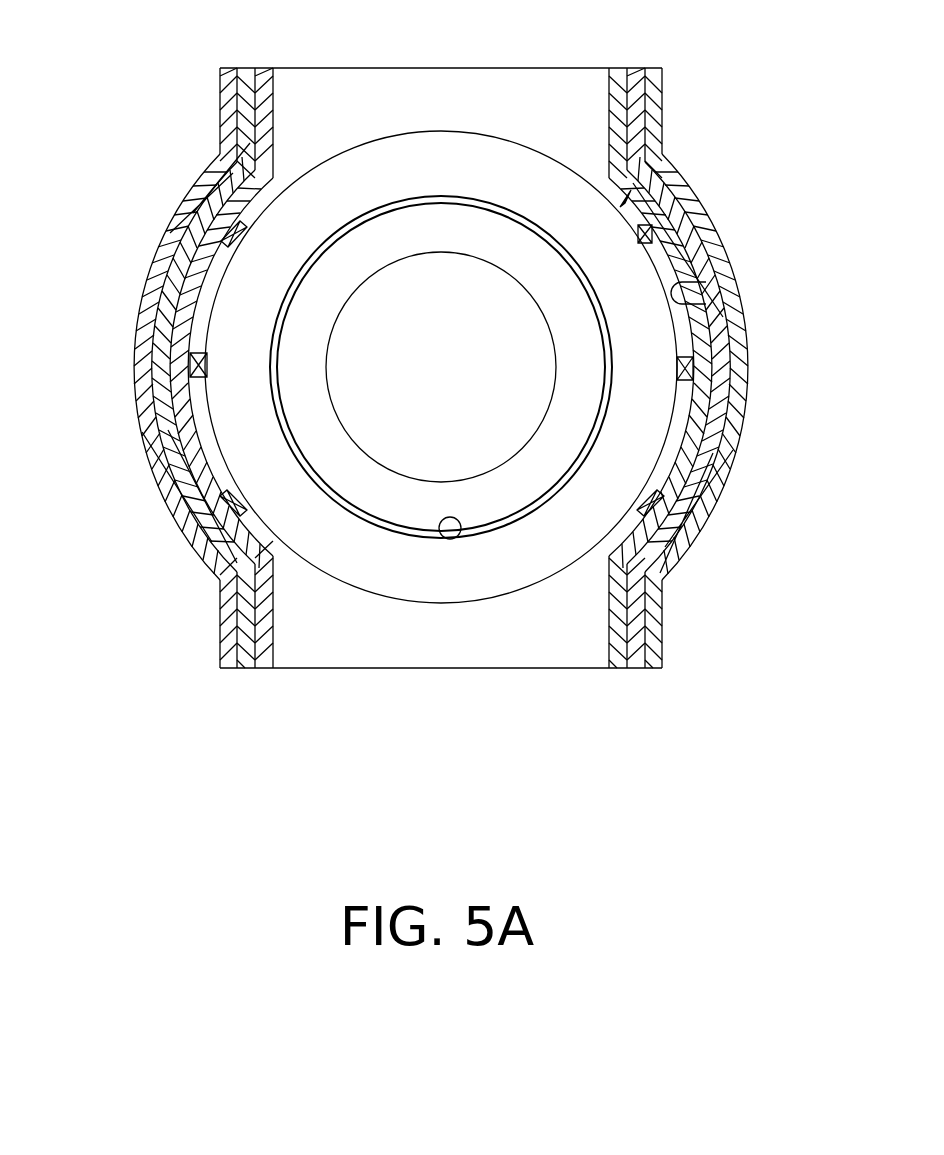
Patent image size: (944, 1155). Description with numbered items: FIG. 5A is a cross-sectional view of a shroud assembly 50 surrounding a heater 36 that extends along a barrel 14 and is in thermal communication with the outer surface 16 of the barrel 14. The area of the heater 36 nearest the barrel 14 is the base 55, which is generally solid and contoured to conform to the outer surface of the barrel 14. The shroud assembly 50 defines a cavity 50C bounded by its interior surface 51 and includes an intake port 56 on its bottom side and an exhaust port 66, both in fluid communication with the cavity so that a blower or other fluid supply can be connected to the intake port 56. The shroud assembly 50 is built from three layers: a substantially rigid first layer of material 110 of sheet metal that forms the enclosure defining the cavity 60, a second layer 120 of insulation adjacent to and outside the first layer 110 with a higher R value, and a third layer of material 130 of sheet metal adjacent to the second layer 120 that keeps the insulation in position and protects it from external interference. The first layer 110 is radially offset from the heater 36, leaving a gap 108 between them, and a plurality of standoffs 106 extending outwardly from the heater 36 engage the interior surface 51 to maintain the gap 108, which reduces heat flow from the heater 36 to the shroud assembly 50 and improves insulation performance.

The barrel 14 is at (488, 225).
The outer surface of the barrel 16 is at (550, 500).
The heater 36 is at (632, 280).
The shroud assembly 50 is at (220, 58).
The cavity 50C is at (633, 183).
The interior surface 51 is at (700, 292).
The base 55 is at (450, 540).
The intake port 56 is at (535, 640).
The cavity 60 is at (375, 620).
The exhaust port 66 is at (560, 75).
The standoffs 106 is at (233, 217).
The gap 108 is at (207, 307).
The first layer of material 110 is at (265, 650).
The second layer 120 is at (210, 530).
The third layer of material 130 is at (170, 497).